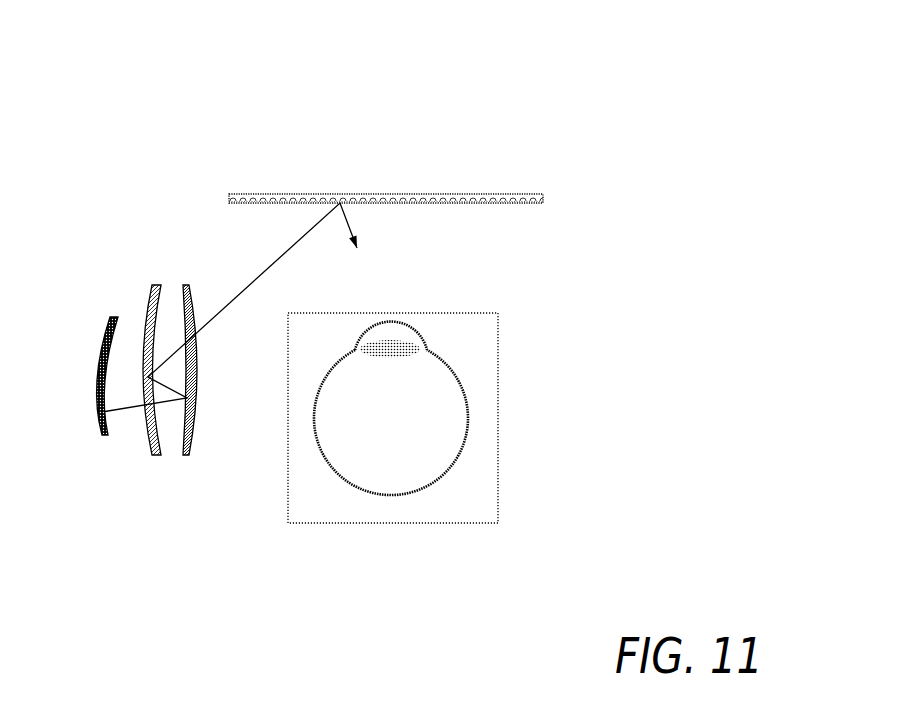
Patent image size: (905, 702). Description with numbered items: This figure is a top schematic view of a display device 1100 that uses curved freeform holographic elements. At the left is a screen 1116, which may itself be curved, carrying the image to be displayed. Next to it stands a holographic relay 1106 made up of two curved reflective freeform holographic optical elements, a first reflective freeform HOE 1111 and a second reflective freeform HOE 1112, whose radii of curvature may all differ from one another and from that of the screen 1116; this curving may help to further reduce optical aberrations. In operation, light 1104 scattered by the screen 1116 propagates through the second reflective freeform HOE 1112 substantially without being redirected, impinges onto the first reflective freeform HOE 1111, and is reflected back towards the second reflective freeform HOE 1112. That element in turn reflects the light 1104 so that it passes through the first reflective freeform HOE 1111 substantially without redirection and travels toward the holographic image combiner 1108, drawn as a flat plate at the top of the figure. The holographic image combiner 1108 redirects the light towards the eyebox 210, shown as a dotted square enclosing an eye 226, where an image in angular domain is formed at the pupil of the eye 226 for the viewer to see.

The display device 1100 is at (110, 108).
The light 1104 is at (232, 302).
The holographic relay 1106 is at (171, 357).
The holographic image combiner 1108 is at (467, 194).
The first reflective freeform HOE 1111 is at (187, 283).
The second reflective freeform HOE 1112 is at (155, 283).
The screen 1116 is at (105, 337).
The eyebox 210 is at (487, 511).
The eye 226 is at (468, 407).